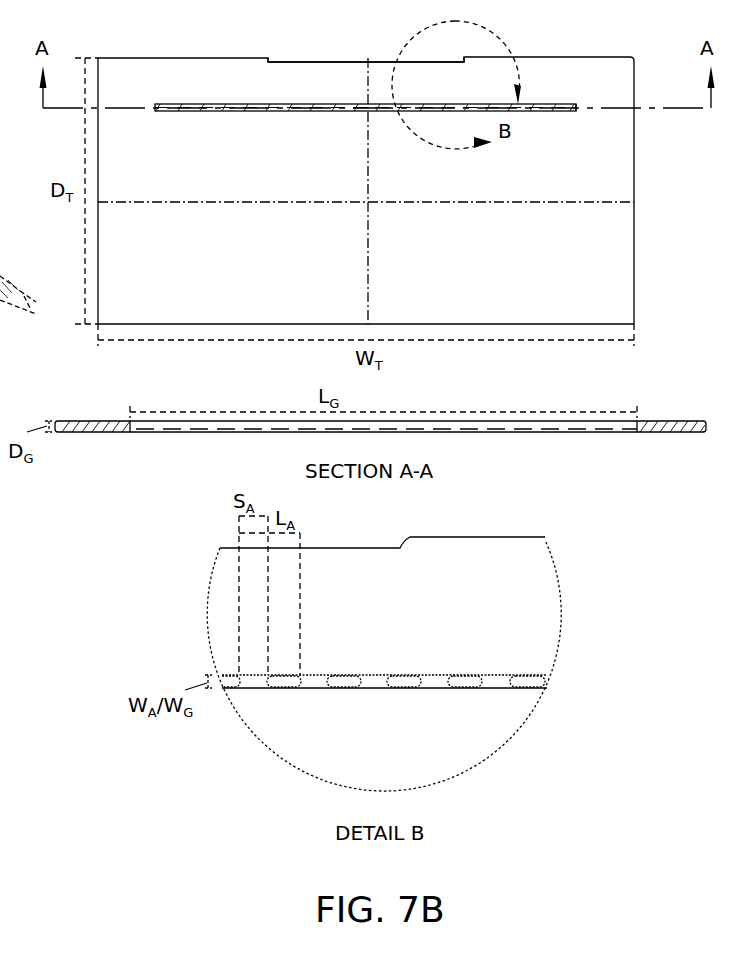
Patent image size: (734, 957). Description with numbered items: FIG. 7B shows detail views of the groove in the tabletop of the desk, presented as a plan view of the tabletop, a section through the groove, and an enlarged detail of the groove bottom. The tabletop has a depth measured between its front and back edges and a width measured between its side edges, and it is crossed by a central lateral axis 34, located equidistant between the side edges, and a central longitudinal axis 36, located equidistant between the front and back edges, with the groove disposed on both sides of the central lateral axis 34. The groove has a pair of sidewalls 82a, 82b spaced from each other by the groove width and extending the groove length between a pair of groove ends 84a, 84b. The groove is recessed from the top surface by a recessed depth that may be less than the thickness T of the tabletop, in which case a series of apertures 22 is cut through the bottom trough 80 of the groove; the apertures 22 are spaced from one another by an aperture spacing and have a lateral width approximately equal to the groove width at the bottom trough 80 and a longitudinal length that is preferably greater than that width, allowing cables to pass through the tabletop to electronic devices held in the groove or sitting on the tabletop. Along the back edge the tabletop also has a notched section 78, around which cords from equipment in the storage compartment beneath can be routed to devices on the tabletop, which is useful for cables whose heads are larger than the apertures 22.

The apertures 22 is at (420, 687).
The central lateral axis 34 is at (370, 270).
The central longitudinal axis 36 is at (170, 202).
The notched section 78 is at (323, 60).
The bottom trough 80 is at (498, 683).
The sidewall 82a is at (128, 425).
The sidewall 82b is at (638, 428).
The groove end 84a is at (155, 107).
The groove end 84b is at (577, 107).
The thickness T is at (33, 306).